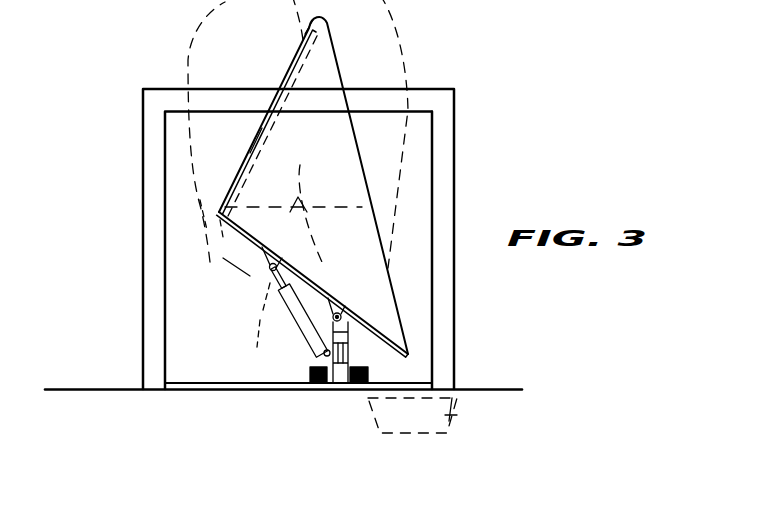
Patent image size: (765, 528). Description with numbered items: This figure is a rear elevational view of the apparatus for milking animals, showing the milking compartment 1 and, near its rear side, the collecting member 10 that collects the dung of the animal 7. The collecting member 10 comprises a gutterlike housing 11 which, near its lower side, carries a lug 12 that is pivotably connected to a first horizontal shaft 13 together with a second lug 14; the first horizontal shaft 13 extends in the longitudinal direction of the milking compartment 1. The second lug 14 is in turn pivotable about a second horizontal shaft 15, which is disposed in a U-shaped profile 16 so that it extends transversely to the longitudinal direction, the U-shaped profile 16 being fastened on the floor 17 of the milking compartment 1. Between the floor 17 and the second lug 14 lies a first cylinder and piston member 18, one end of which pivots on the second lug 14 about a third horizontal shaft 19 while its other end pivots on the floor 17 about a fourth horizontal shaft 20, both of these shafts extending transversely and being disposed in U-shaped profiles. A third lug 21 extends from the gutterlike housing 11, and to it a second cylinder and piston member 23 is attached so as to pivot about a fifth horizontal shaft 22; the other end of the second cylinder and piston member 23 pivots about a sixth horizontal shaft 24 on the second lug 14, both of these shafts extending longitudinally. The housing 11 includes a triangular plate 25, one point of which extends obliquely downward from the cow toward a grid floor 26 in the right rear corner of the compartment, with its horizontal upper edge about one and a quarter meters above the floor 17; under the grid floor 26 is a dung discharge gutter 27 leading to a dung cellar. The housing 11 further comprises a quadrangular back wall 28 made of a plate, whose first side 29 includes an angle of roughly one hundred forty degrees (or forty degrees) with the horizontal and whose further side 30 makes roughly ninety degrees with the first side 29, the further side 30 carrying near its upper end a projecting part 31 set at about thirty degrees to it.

The milking compartment 1 is at (141, 153).
The animal 7 is at (400, 31).
The collecting member 10 is at (335, 73).
The gutterlike housing 11 is at (307, 143).
The lug 12 is at (318, 290).
The first horizontal shaft 13 is at (341, 304).
The second lug 14 is at (357, 357).
The second horizontal shaft 15 is at (317, 373).
The U-shaped profile 16 is at (317, 387).
The floor 17 is at (192, 388).
The first cylinder and piston member 18 is at (321, 358).
The third horizontal shaft 19 is at (377, 338).
The fourth horizontal shaft 20 is at (357, 400).
The third lug 21 is at (255, 257).
The fifth horizontal shaft 22 is at (273, 273).
The second cylinder and piston member 23 is at (290, 307).
The sixth horizontal shaft 24 is at (313, 355).
The triangular plate 25 is at (335, 226).
The grid floor 26 is at (464, 421).
The dung discharge gutter 27 is at (415, 425).
The back wall 28 is at (340, 165).
The first side 29 is at (215, 240).
The further side 30 is at (250, 153).
The projecting part 31 is at (305, 32).